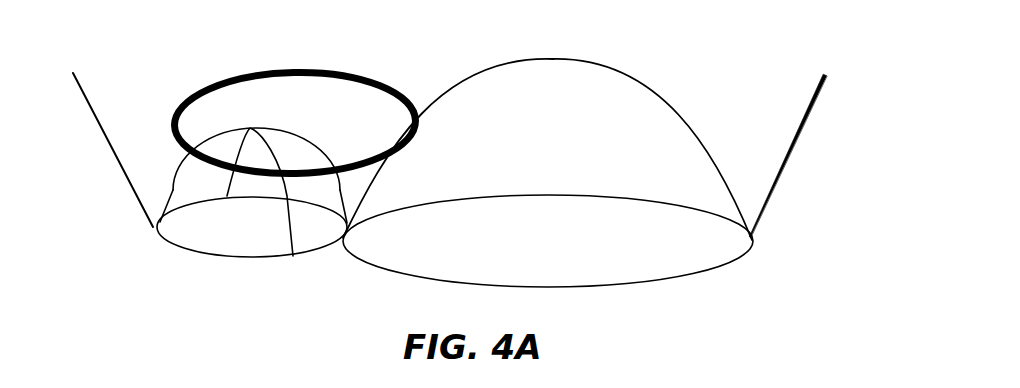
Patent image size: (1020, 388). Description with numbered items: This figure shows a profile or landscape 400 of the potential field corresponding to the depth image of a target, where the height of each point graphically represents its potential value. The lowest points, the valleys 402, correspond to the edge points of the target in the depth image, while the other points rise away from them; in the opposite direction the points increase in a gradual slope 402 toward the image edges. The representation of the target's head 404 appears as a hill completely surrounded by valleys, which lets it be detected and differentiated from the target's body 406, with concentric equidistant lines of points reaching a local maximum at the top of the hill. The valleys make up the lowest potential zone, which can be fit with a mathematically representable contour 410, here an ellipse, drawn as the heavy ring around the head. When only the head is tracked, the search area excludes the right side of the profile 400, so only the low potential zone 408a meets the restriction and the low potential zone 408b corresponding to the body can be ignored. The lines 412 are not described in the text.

The profile 400 is at (380, 25).
The valleys 402 is at (150, 228).
The target's head 404 is at (327, 153).
The target's body 406 is at (603, 65).
The low potential zone 408a is at (238, 257).
The low potential zone 408b is at (742, 257).
The mathematically representable contour 410 is at (200, 88).
The edge line 412 is at (105, 142).